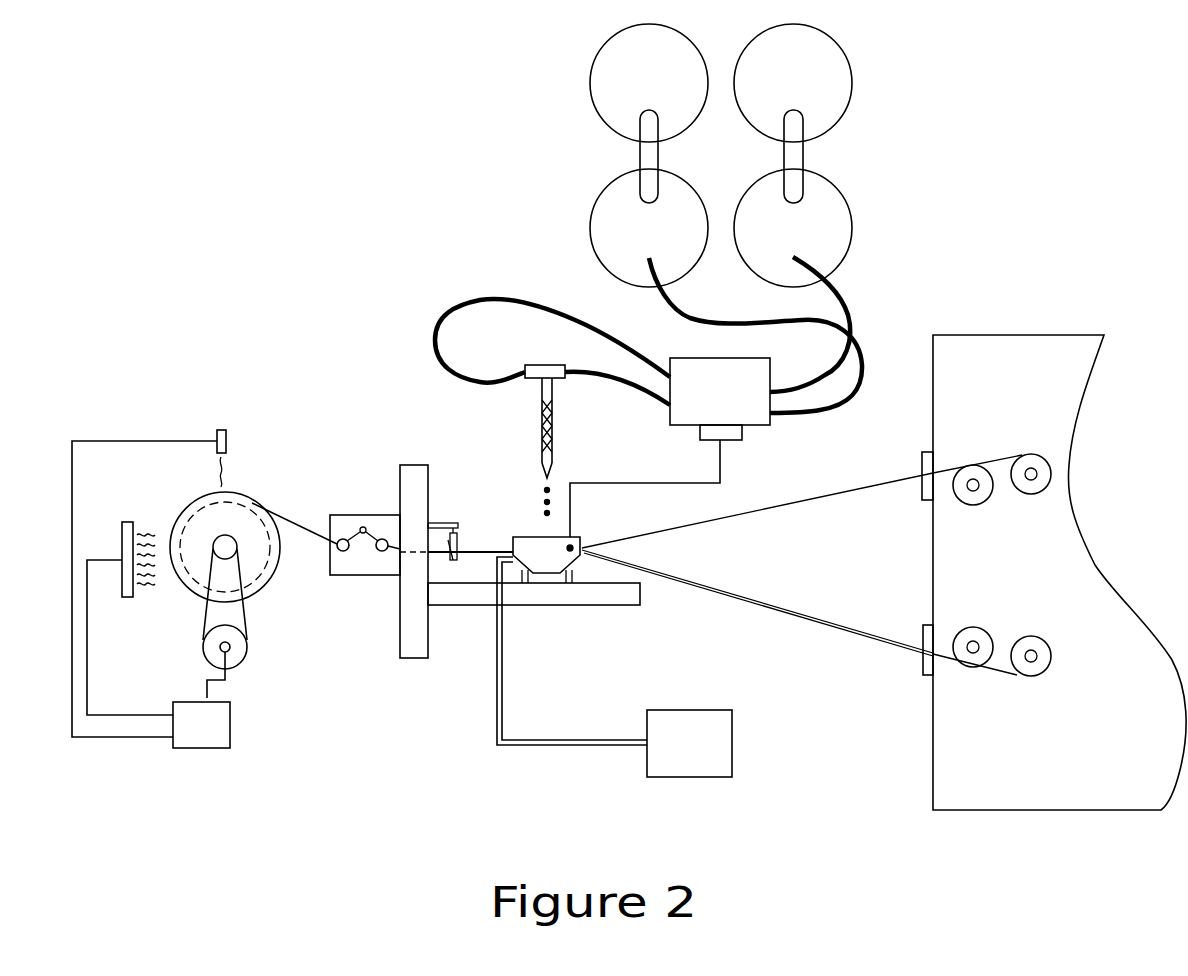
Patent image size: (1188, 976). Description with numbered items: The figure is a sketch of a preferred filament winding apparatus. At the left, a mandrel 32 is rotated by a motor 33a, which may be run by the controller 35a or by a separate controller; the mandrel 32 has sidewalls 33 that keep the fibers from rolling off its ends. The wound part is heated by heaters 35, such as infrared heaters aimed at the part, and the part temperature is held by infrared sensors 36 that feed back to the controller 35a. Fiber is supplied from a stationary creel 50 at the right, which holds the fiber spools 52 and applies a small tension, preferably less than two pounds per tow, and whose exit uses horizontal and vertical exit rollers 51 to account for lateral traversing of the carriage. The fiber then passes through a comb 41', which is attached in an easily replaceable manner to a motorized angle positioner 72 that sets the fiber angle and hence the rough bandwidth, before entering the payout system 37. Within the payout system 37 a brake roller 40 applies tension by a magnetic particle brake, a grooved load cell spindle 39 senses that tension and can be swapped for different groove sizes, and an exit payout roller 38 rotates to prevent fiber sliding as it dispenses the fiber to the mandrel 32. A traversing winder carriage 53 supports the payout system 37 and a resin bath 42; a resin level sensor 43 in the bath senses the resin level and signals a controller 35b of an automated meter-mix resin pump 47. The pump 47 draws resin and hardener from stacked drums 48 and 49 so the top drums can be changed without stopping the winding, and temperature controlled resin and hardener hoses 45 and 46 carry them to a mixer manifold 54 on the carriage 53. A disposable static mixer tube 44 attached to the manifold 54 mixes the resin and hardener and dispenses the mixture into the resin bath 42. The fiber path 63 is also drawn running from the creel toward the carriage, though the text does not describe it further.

The mandrel 32 is at (246, 508).
The sidewalls 33 is at (190, 503).
The motor 33a is at (232, 646).
The heaters 35 is at (125, 598).
The controller 35a is at (198, 725).
The controller 35b is at (687, 733).
The infrared sensors 36 is at (221, 430).
The payout system 37 is at (330, 565).
The exit payout roller 38 is at (343, 553).
The grooved load cell spindle 39 is at (362, 527).
The brake roller 40 is at (375, 552).
The comb 41' is at (448, 482).
The resin bath 42 is at (545, 556).
The resin level sensor 43 is at (572, 550).
The disposable static mixer tube 44 is at (553, 425).
The resin hose 45 is at (597, 365).
The hardener hose 46 is at (453, 308).
The automated meter-mix resin pump 47 is at (750, 407).
The resin drum 48 is at (590, 233).
The hardener drum 49 is at (880, 218).
The stationary creel 50 is at (933, 755).
The exit rollers 51 is at (922, 492).
The fiber spools 52 is at (980, 667).
The traversing winder carriage 53 is at (463, 593).
The mixer manifold 54 is at (553, 382).
The web 63 is at (783, 602).
The motorized angle positioner 72 is at (460, 527).